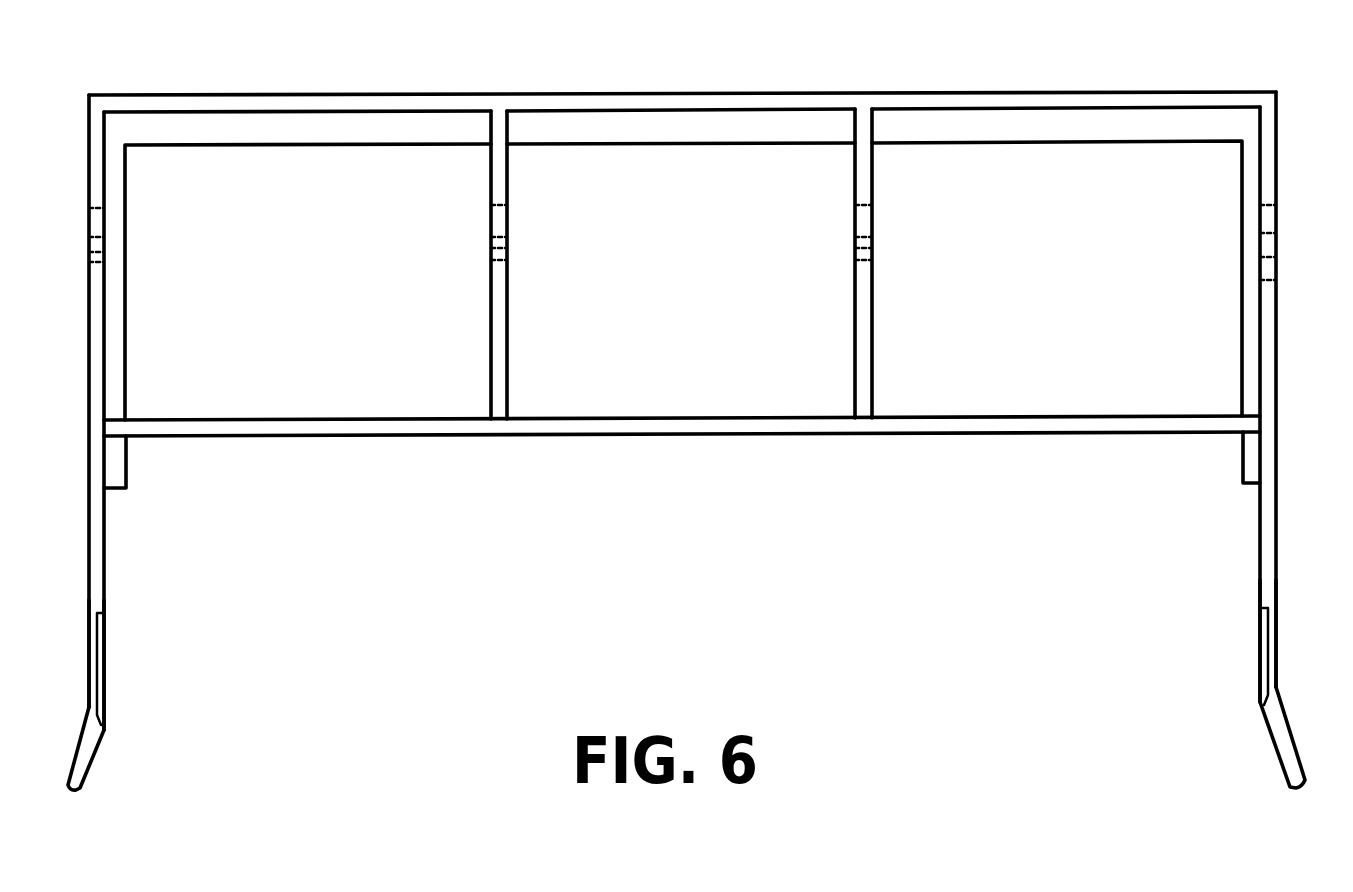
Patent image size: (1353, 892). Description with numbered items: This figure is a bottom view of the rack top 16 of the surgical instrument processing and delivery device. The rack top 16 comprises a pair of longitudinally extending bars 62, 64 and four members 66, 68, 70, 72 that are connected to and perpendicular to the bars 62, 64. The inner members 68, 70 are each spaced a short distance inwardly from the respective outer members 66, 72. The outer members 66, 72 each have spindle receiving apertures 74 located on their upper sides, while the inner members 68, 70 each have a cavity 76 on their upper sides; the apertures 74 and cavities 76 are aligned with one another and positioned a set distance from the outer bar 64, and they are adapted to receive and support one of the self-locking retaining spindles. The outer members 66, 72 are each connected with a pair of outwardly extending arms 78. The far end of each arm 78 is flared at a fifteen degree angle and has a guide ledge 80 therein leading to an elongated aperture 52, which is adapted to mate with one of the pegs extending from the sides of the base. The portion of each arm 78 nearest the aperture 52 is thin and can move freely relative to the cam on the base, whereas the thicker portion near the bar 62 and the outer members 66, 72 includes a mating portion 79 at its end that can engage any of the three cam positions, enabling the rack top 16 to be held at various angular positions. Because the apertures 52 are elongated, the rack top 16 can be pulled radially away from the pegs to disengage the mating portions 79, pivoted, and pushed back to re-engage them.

The rack top 16 is at (1022, 70).
The elongated aperture 52 is at (92, 660).
The bar 62 is at (691, 427).
The outer bar 64 is at (803, 100).
The outer member 66 is at (91, 336).
The inner member 68 is at (497, 355).
The inner member 70 is at (862, 348).
The outer member 72 is at (1270, 341).
The spindle receiving aperture 74 is at (88, 250).
The cavity 76 is at (507, 248).
The arm 78 is at (98, 557).
The mating portion 79 is at (120, 467).
The guide ledge 80 is at (107, 703).